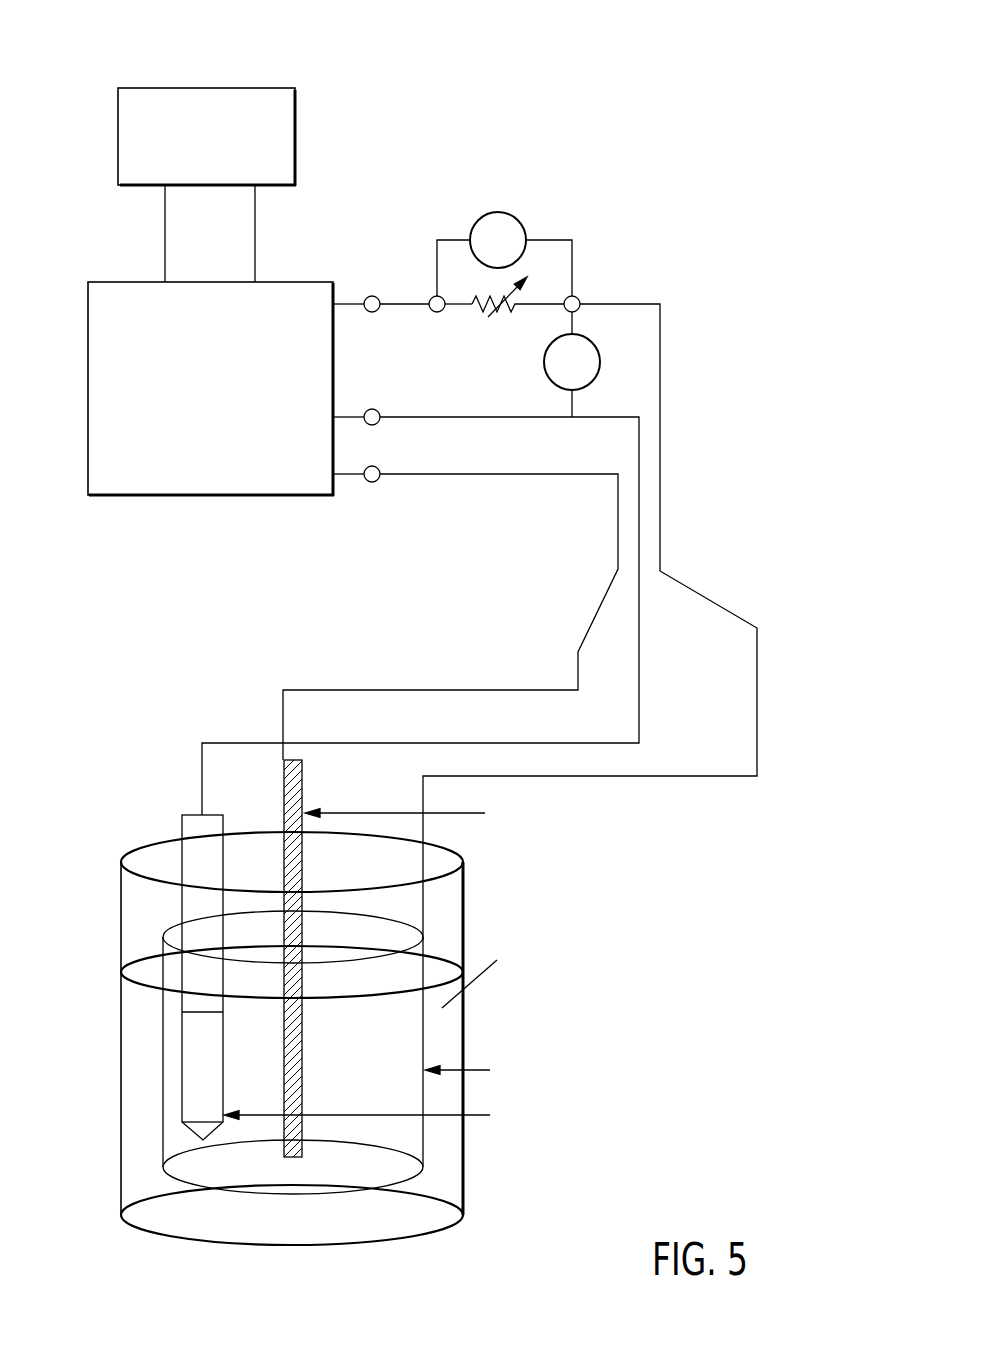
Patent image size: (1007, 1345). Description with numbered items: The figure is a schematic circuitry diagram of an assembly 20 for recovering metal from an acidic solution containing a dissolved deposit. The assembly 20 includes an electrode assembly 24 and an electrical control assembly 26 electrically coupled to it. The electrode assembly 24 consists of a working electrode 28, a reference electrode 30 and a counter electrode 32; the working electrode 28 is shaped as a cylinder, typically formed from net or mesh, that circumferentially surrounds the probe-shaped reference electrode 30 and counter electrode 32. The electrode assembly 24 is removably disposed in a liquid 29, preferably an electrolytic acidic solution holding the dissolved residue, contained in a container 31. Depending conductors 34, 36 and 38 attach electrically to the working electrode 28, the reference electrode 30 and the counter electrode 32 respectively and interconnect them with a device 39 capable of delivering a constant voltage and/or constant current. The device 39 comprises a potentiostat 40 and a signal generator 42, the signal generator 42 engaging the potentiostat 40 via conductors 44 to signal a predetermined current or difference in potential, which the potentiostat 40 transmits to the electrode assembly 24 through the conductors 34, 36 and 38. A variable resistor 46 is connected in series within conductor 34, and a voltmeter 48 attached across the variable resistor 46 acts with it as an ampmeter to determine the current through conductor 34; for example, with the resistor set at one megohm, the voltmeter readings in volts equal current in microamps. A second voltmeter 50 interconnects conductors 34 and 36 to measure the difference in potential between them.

The assembly 20 is at (331, 200).
The electrode assembly 24 is at (153, 798).
The electrical control assembly 26 is at (517, 143).
The working electrode 28 is at (435, 960).
The liquid 29 is at (447, 1040).
The reference electrode 30 is at (190, 827).
The container 31 is at (463, 1168).
The counter electrode 32 is at (303, 792).
The conductor 34 is at (660, 400).
The conductor 36 is at (637, 418).
The conductor 38 is at (617, 513).
The device 39 is at (327, 258).
The potentiostat 40 is at (222, 431).
The signal generator 42 is at (210, 88).
The conductors 44 is at (250, 233).
The variable resistor 46 is at (480, 312).
The voltmeter 48 is at (520, 220).
The voltmeter 50 is at (544, 366).